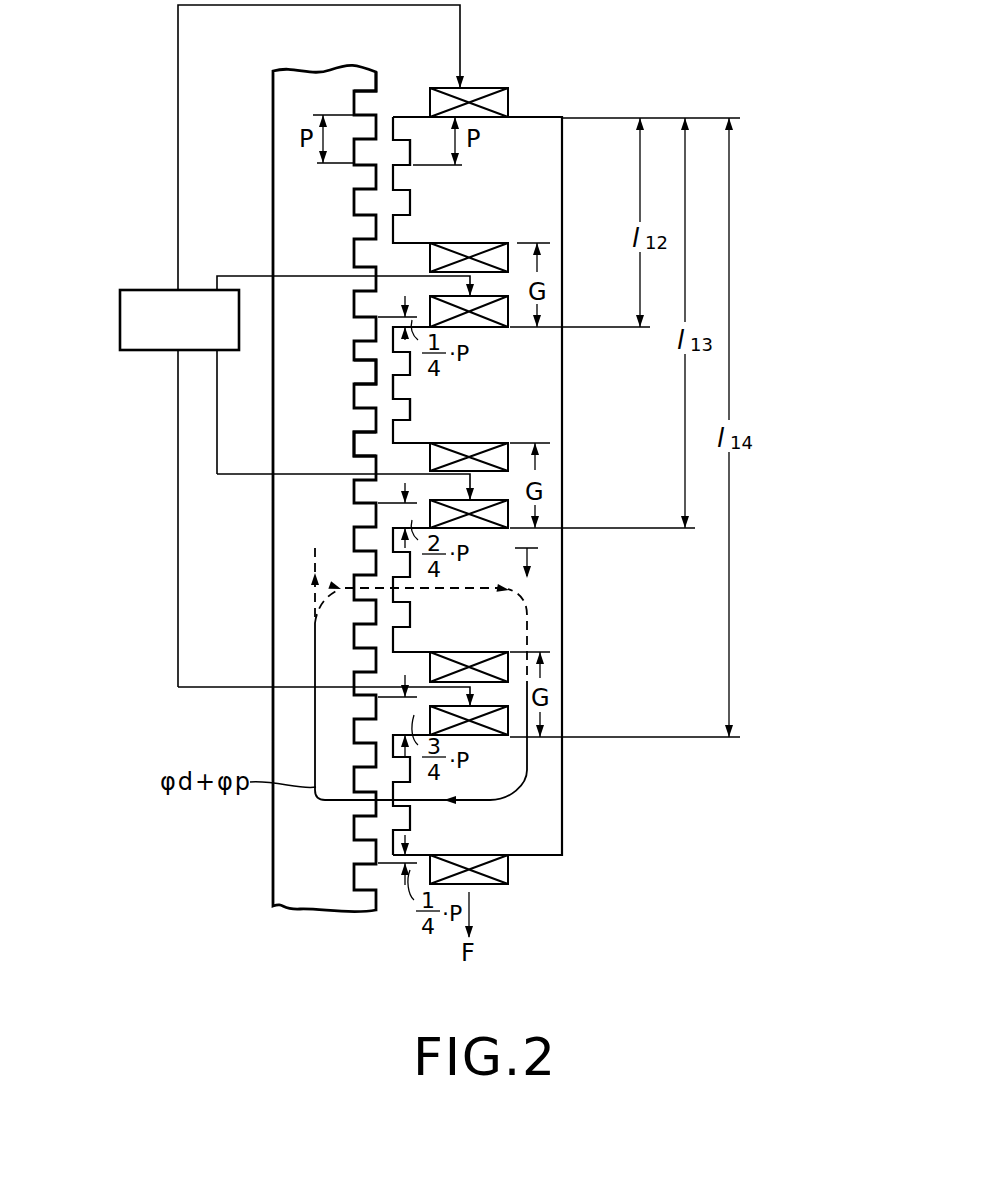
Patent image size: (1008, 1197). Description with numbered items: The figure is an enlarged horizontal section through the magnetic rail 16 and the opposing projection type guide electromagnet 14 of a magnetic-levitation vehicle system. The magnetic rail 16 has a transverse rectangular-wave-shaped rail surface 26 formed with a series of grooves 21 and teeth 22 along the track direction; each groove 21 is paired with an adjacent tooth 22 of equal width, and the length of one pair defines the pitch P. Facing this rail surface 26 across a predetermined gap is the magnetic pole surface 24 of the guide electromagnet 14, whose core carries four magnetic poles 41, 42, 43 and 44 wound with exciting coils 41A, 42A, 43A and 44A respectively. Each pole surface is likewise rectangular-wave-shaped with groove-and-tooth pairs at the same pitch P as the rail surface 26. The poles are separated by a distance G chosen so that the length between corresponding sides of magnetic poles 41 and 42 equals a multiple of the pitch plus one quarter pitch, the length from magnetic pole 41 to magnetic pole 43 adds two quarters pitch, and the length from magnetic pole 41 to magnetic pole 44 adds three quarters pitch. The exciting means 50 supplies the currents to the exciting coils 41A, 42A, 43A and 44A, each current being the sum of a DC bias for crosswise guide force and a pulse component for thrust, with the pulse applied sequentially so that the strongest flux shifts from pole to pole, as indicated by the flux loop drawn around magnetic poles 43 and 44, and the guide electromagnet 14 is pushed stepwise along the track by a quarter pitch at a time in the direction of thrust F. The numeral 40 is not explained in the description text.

The projection type guide electromagnet 14 is at (536, 467).
The magnetic rail 16 is at (273, 94).
The groove 21 is at (368, 440).
The tooth 22 is at (397, 392).
The magnetic pole surface 24 is at (405, 138).
The transverse rectangular-wave-shaped rail surface 26 is at (365, 90).
The stator core 40 is at (540, 857).
The magnetic pole 41 is at (523, 201).
The magnetic pole 42 is at (527, 405).
The magnetic pole 43 is at (527, 583).
The magnetic pole 44 is at (528, 809).
The exciting coil 41A is at (472, 93).
The exciting coil 42A is at (505, 308).
The exciting coil 43A is at (505, 512).
The exciting coil 44A is at (505, 718).
The exciting means 50 is at (137, 300).